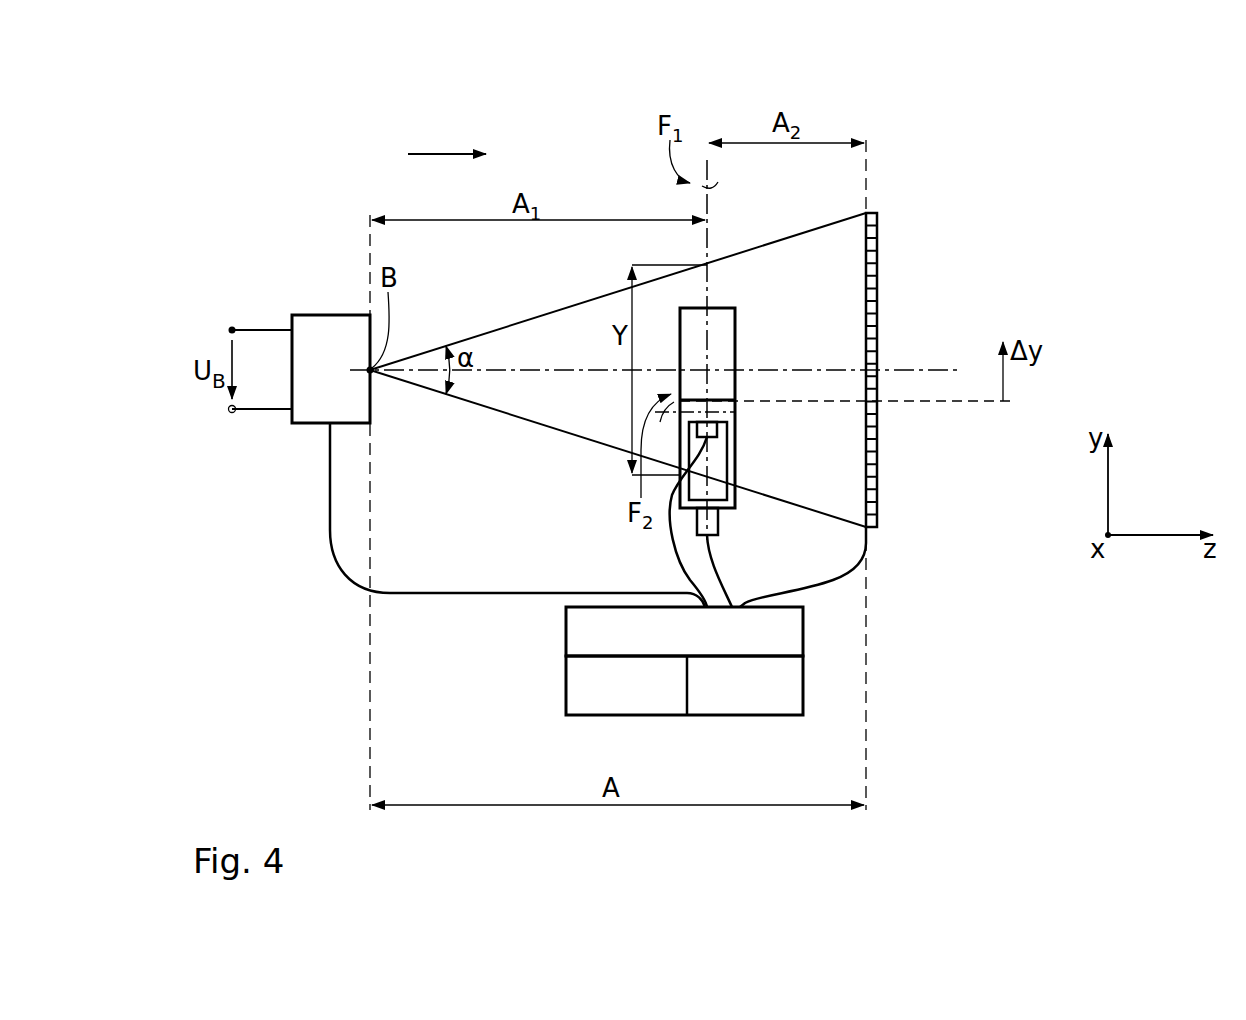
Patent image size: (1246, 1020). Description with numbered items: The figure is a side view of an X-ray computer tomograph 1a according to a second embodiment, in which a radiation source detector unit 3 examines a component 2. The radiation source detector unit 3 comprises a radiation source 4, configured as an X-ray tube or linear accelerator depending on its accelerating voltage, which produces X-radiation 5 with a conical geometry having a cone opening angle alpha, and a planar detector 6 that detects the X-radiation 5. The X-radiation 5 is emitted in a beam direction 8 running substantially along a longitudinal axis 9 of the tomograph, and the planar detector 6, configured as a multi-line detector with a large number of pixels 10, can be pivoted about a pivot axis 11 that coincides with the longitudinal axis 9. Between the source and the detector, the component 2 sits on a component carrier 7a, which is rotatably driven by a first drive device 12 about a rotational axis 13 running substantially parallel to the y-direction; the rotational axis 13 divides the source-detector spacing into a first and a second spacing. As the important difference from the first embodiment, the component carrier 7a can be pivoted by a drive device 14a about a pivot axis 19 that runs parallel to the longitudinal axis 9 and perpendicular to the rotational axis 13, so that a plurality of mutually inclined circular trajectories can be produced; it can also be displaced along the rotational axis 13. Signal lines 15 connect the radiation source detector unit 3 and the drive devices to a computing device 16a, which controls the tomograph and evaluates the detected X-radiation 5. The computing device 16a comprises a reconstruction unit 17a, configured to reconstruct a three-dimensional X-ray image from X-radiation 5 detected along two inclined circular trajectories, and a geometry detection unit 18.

The X-ray computer tomograph 1a is at (603, 160).
The component 2 is at (727, 358).
The radiation source detector unit 3 is at (307, 297).
The radiation source 4 is at (332, 330).
The X-radiation 5 is at (487, 320).
The planar detector 6 is at (880, 283).
The component carrier 7a is at (728, 420).
The beam direction 8 is at (445, 152).
The longitudinal axis 9 is at (413, 375).
The pixels 10 is at (878, 517).
The pivot axis 11 is at (950, 368).
The first drive device 12 is at (713, 445).
The rotational axis 13 is at (710, 292).
The drive device 14a is at (724, 523).
The signal lines 15 is at (740, 588).
The computing device 16a is at (566, 640).
The reconstruction unit 17a is at (566, 685).
The geometry detection unit 18 is at (735, 707).
The pivot axis 19 is at (731, 412).